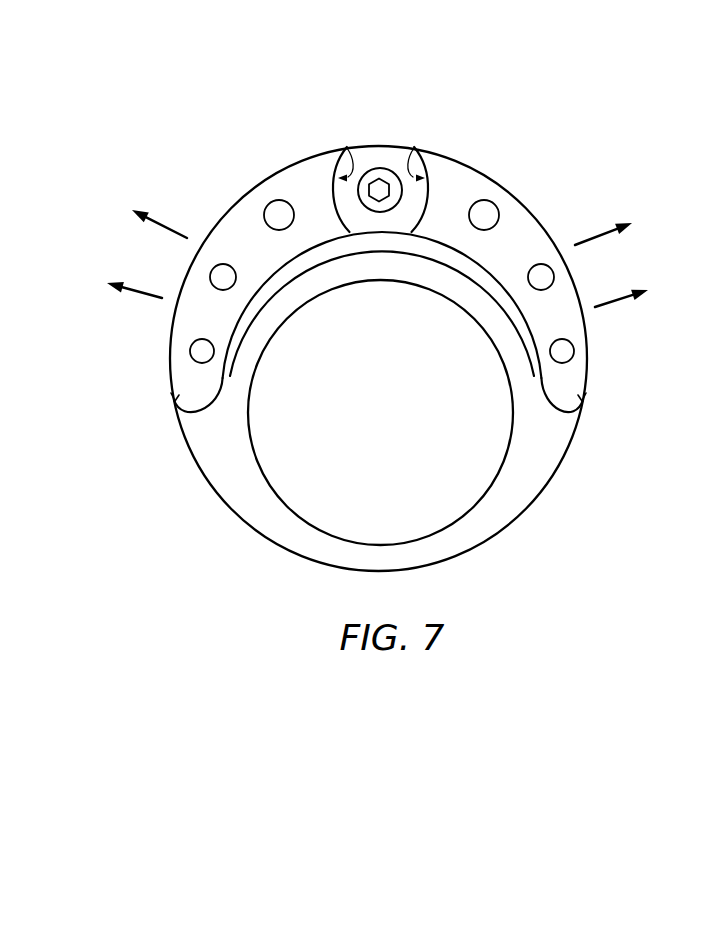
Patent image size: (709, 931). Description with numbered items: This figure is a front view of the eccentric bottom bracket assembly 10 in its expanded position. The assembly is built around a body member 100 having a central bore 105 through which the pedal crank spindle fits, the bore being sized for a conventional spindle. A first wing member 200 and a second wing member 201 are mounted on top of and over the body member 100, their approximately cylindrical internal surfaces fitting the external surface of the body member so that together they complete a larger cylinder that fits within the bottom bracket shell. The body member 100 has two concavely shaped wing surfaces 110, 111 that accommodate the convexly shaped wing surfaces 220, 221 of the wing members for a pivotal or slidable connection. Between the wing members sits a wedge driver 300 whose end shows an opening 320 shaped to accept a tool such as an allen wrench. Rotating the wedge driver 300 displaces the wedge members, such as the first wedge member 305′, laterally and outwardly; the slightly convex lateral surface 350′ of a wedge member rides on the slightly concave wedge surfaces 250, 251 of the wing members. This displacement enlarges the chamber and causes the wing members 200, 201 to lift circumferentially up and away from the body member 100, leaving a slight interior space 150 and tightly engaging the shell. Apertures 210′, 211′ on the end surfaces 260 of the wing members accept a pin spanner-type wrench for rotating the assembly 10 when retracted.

The eccentric bottom bracket assembly 10 is at (386, 320).
The body member 100 is at (538, 464).
The bore 105 is at (322, 444).
The wing surface of the body member 110 is at (193, 416).
The wing surface of the body member 111 is at (566, 416).
The interior space 150 is at (425, 257).
The first wing member 200 is at (297, 185).
The second wing member 201 is at (473, 177).
The aperture 210′ is at (277, 214).
The aperture 211′ is at (487, 214).
The wing surface of the wing member 220 is at (206, 406).
The wing surface of the wing member 221 is at (556, 406).
The first wedge surface 250 is at (333, 198).
The second wedge surface 251 is at (431, 200).
The end surfaces 260 is at (445, 177).
The wedge driver 300 is at (383, 136).
The first wedge member 305′ is at (380, 168).
The opening 320 is at (380, 190).
The lateral surface of the wedge member 350′ is at (346, 147).